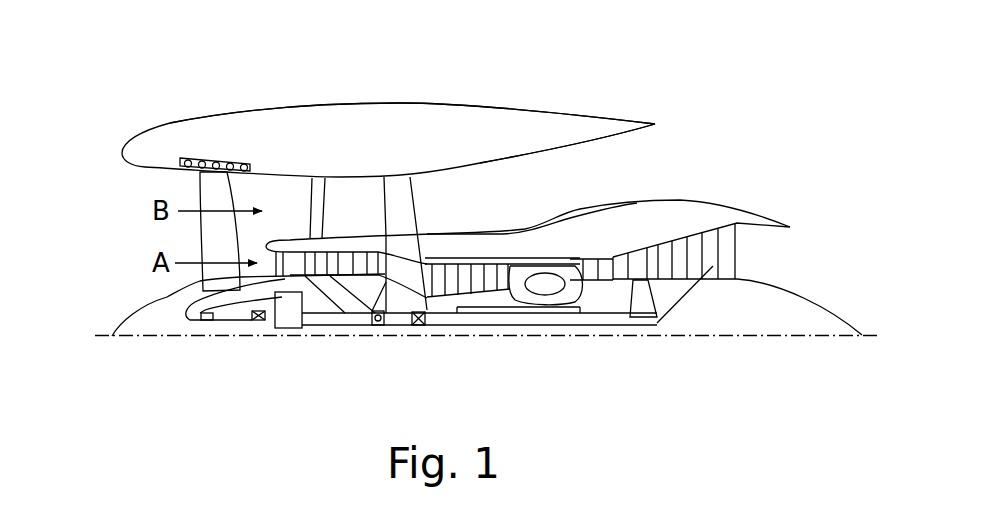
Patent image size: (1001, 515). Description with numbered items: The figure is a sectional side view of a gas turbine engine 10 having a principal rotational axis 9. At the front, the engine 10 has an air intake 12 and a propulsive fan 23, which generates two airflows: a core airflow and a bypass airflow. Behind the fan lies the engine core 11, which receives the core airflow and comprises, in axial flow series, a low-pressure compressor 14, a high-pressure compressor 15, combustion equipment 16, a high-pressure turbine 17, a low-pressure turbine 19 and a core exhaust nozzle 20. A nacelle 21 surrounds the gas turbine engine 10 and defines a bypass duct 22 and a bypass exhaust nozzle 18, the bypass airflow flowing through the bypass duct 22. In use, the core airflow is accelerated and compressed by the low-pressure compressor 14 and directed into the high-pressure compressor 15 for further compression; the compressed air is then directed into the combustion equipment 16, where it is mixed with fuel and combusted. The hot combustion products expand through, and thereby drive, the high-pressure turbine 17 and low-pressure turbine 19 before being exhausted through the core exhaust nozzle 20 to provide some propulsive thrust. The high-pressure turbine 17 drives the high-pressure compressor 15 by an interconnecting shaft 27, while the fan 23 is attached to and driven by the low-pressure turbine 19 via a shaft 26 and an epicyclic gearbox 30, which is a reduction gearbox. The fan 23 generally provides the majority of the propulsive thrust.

The principal rotational axis 9 is at (760, 338).
The gas turbine engine 10 is at (178, 124).
The engine core 11 is at (552, 255).
The air intake 12 is at (137, 189).
The low-pressure compressor 14 is at (343, 253).
The high-pressure compressor 15 is at (473, 282).
The combustion equipment 16 is at (538, 283).
The high-pressure turbine 17 is at (600, 262).
The bypass exhaust nozzle 18 is at (742, 122).
The low-pressure turbine 19 is at (712, 266).
The core exhaust nozzle 20 is at (795, 263).
The nacelle 21 is at (398, 118).
The bypass duct 22 is at (633, 161).
The propulsive fan 23 is at (205, 245).
The shaft 26 is at (443, 327).
The interconnecting shaft 27 is at (502, 320).
The epicyclic gearbox 30 is at (288, 328).